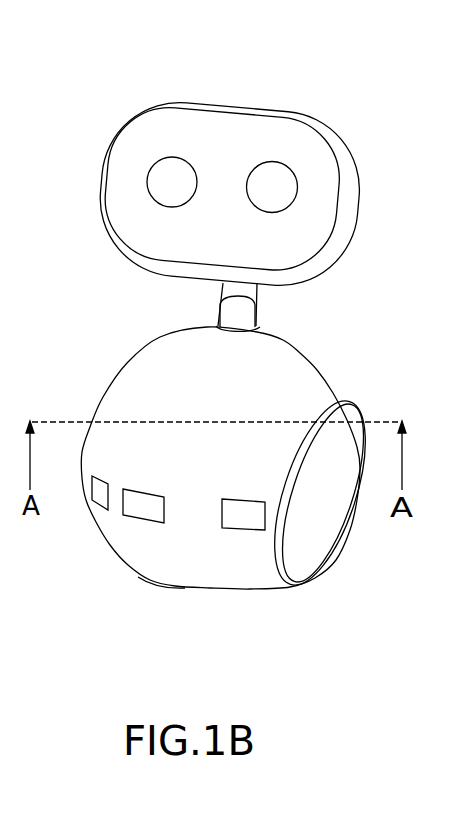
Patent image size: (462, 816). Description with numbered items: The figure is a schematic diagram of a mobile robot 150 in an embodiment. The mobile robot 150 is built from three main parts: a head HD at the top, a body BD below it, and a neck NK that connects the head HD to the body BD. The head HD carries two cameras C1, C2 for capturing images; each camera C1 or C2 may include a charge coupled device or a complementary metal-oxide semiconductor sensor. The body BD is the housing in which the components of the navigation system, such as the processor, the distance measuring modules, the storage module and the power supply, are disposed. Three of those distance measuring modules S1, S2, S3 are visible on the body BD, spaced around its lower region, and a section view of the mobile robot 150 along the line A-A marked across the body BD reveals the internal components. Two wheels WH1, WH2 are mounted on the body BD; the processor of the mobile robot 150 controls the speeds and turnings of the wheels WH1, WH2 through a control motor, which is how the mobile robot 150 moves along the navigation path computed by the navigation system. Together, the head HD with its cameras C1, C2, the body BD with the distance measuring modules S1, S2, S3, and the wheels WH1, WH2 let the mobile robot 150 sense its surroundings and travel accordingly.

The mobile robot 150 is at (461, 53).
The head HD is at (352, 155).
The camera C1 is at (156, 164).
The camera C2 is at (290, 169).
The neck NK is at (258, 292).
The body BD is at (310, 360).
The wheel WH1 is at (307, 541).
The wheel WH2 is at (128, 555).
The distance measuring module S1 is at (230, 529).
The distance measuring module S2 is at (123, 515).
The distance measuring module S3 is at (90, 496).